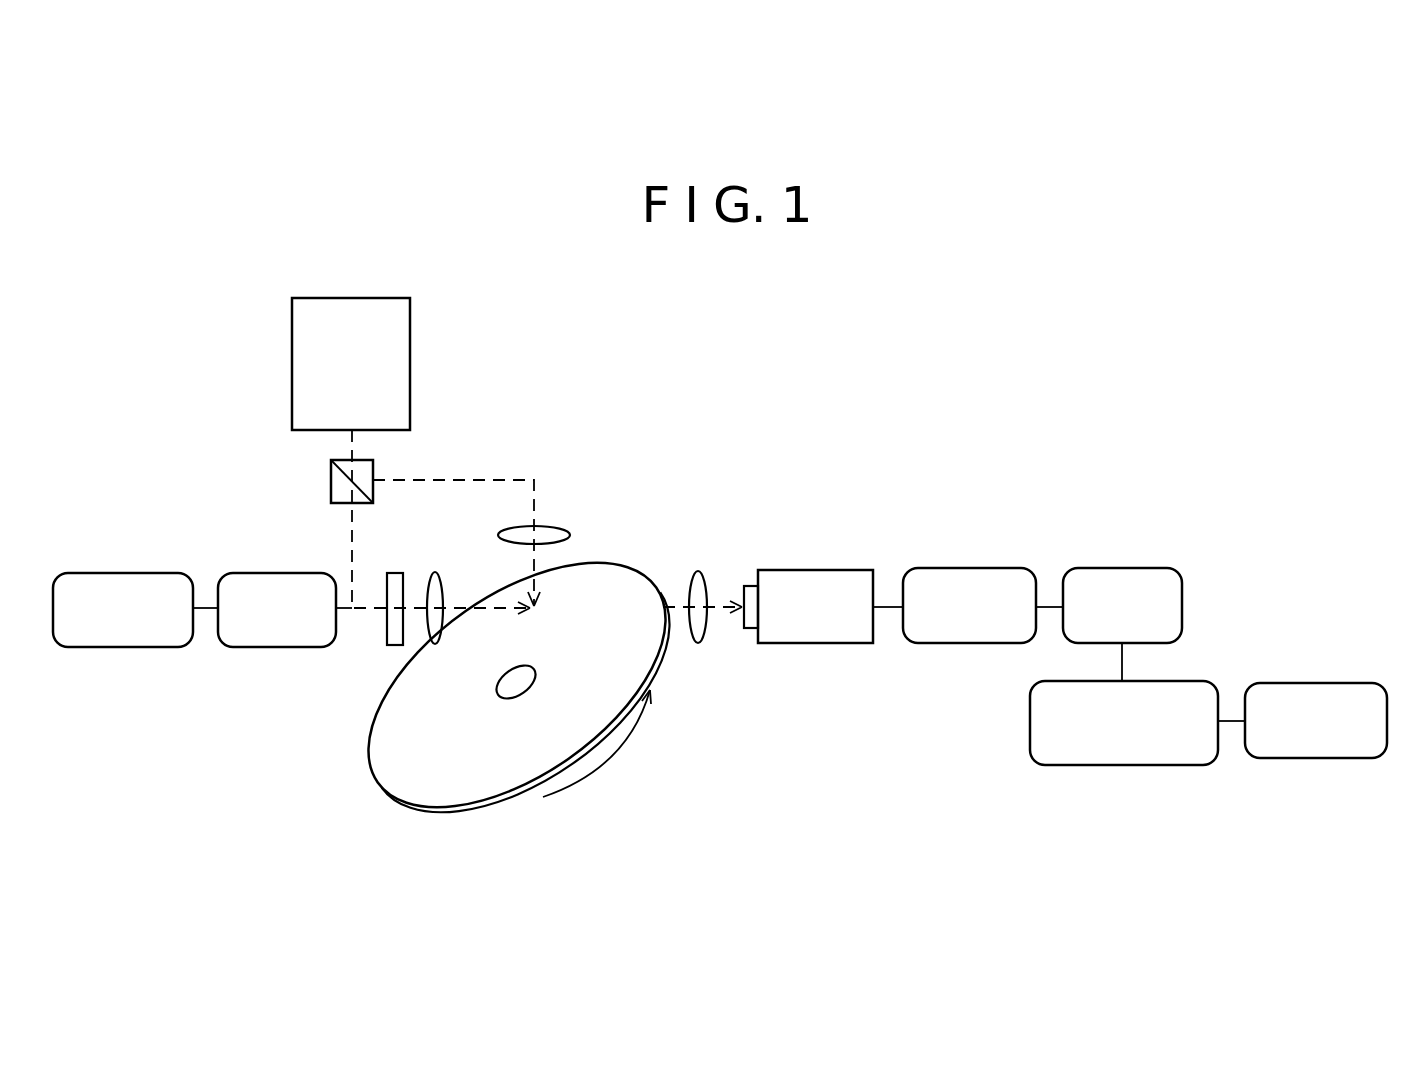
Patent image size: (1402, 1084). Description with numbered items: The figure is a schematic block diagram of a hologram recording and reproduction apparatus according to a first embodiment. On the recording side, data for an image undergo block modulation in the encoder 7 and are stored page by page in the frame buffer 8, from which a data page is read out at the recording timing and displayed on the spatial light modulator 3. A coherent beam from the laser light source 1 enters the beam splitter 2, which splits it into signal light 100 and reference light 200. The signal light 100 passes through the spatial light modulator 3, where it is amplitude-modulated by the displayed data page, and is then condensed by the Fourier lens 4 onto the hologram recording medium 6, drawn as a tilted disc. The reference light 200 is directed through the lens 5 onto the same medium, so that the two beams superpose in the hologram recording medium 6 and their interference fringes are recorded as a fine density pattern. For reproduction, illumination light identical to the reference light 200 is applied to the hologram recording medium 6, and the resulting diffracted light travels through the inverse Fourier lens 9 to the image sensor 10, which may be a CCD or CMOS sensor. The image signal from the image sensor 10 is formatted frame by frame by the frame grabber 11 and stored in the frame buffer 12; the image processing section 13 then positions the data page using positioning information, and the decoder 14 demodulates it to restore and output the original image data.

The laser light source 1 is at (411, 333).
The beam splitter 2 is at (365, 460).
The spatial light modulator 3 is at (398, 573).
The lens 4 is at (438, 575).
The lens 5 is at (552, 530).
The hologram recording medium 6 is at (473, 793).
The encoder 7 is at (121, 648).
The frame buffer 8 is at (277, 648).
The lens 9 is at (700, 570).
The image sensor 10 is at (815, 568).
The frame grabber 11 is at (970, 568).
The frame buffer 12 is at (1122, 568).
The image processing section 13 is at (1125, 766).
The decoder 14 is at (1312, 759).
The signal light 100 is at (348, 536).
The reference light 200 is at (535, 474).